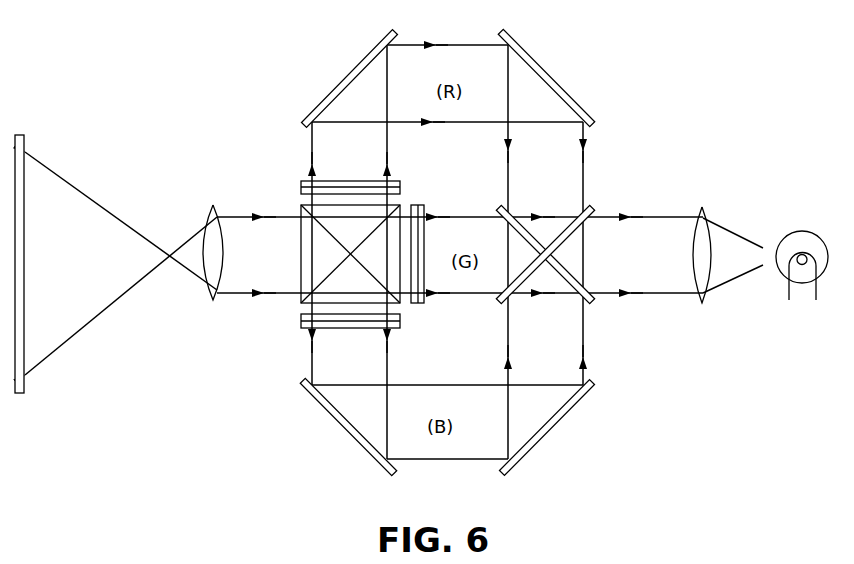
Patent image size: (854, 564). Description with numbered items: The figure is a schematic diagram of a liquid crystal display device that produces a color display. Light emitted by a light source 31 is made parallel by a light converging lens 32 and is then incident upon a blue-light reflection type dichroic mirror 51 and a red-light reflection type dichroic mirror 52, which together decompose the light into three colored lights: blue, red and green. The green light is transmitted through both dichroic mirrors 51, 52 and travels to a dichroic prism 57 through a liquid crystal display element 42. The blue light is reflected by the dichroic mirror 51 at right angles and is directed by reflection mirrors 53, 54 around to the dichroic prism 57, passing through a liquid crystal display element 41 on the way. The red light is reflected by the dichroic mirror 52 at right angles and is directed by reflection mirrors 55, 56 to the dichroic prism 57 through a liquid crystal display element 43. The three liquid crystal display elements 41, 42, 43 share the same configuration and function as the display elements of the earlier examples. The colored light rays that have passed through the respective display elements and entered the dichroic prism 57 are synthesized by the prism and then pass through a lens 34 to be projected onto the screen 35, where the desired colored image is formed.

The light source 31 is at (800, 238).
The light converging lens 32 is at (705, 240).
The projection lens 34 is at (213, 205).
The screen 35 is at (22, 142).
The liquid crystal display element 41 is at (393, 328).
The liquid crystal display element 42 is at (420, 207).
The liquid crystal display element 43 is at (352, 180).
The blue-light reflection type dichroic mirror 51 is at (590, 212).
The red-light reflection type dichroic mirror 52 is at (590, 300).
The reflection mirror 53 is at (557, 427).
The reflection mirror 54 is at (360, 445).
The reflection mirror 55 is at (565, 88).
The reflection mirror 56 is at (372, 47).
The dichroic prism 57 is at (318, 258).